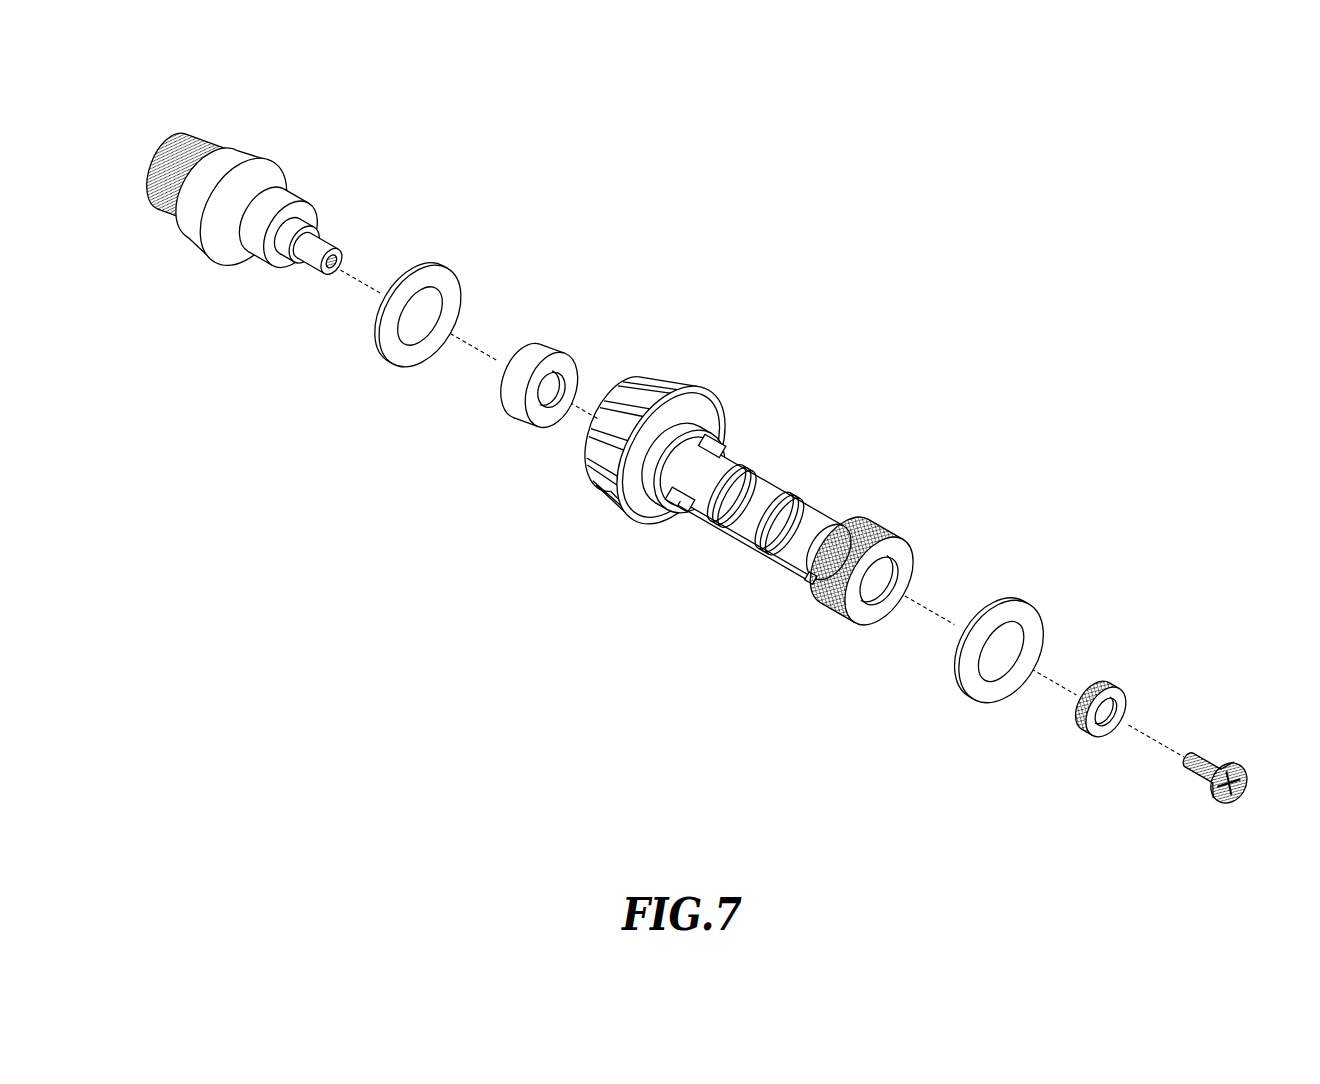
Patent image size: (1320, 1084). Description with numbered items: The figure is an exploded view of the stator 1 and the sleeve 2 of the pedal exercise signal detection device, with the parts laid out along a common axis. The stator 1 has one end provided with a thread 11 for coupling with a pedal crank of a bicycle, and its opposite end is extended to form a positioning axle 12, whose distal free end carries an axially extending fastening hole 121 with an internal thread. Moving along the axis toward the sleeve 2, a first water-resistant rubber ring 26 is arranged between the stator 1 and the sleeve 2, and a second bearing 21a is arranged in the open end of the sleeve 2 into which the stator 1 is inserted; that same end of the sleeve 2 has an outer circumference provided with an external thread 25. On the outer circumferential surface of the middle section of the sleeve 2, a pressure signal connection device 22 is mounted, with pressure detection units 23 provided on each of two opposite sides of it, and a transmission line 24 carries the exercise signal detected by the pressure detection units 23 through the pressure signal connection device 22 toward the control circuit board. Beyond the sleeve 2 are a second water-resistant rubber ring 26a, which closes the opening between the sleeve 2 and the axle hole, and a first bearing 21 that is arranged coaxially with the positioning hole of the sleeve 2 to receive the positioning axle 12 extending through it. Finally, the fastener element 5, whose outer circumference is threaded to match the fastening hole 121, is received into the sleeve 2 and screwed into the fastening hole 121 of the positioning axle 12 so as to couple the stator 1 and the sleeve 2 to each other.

The stator 1 is at (297, 190).
The thread 11 is at (241, 157).
The positioning axle 12 is at (292, 268).
The fastening hole 121 is at (347, 252).
The first water-resistant rubber ring 26 is at (415, 352).
The second bearing 21a is at (545, 352).
The sleeve 2 is at (612, 497).
The pressure detection unit 23 is at (720, 441).
The pressure signal connection device 22 is at (782, 474).
The external thread 25 is at (890, 525).
The transmission line 24 is at (784, 567).
The second water-resistant rubber ring 26a is at (1022, 610).
The first bearing 21 is at (1082, 735).
The fastener element 5 is at (1213, 758).